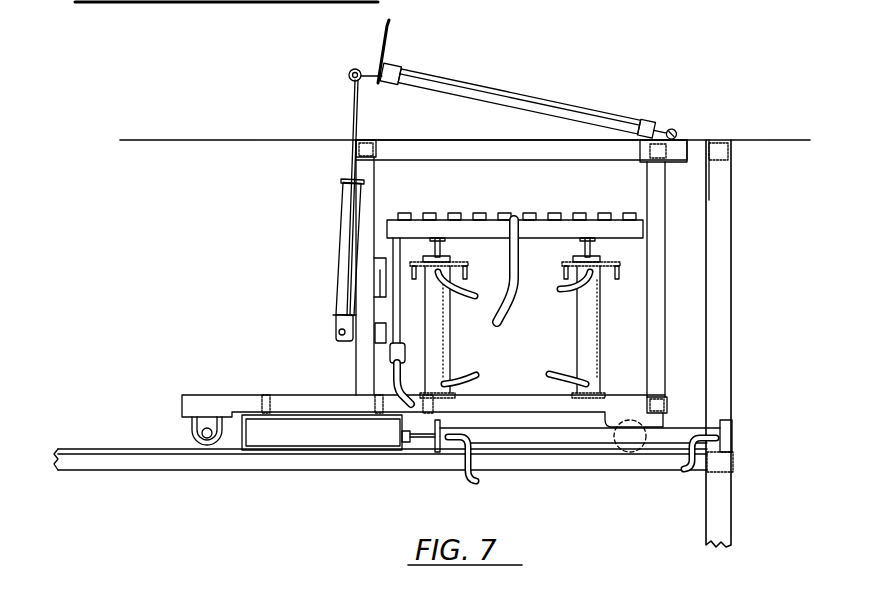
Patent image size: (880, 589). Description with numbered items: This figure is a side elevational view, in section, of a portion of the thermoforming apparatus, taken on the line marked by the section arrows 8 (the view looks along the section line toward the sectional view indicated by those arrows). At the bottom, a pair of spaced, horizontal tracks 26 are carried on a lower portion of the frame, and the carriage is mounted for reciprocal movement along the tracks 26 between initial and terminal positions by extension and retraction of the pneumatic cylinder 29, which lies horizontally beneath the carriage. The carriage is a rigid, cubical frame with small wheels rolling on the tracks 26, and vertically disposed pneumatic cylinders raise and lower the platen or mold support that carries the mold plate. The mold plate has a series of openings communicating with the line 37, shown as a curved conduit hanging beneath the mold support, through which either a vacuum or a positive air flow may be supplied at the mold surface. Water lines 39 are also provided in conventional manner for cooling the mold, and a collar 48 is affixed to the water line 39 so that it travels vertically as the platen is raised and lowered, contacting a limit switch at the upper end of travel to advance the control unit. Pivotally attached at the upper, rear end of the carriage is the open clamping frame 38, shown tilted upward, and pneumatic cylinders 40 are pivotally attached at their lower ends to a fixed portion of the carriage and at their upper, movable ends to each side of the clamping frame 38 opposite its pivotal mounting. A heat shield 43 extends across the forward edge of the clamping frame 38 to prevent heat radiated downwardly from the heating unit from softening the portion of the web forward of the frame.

The section line 8- 8 is at (833, 263).
The horizontal tracks 26 is at (147, 448).
The pneumatic cylinder 29 is at (555, 440).
The line 37 is at (516, 305).
The open clamping frame 38 is at (588, 108).
The water lines 39 is at (393, 268).
The pneumatic cylinders 40 is at (347, 202).
The heat shield 43 is at (390, 46).
The collar 48 is at (390, 357).